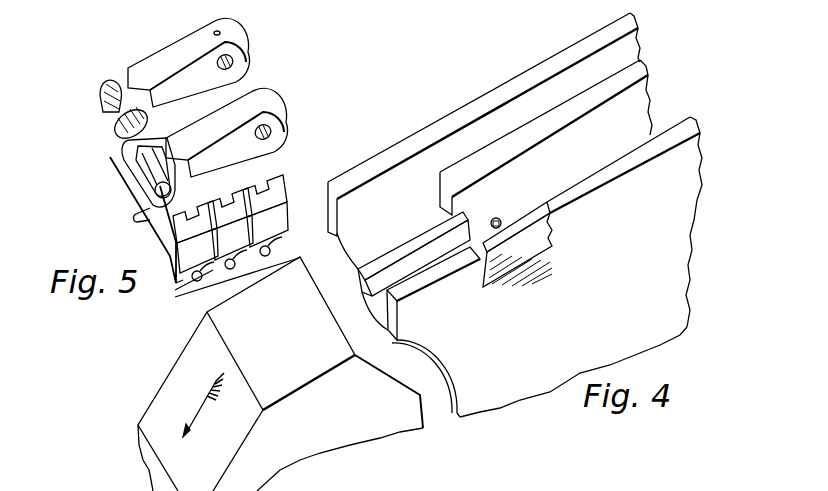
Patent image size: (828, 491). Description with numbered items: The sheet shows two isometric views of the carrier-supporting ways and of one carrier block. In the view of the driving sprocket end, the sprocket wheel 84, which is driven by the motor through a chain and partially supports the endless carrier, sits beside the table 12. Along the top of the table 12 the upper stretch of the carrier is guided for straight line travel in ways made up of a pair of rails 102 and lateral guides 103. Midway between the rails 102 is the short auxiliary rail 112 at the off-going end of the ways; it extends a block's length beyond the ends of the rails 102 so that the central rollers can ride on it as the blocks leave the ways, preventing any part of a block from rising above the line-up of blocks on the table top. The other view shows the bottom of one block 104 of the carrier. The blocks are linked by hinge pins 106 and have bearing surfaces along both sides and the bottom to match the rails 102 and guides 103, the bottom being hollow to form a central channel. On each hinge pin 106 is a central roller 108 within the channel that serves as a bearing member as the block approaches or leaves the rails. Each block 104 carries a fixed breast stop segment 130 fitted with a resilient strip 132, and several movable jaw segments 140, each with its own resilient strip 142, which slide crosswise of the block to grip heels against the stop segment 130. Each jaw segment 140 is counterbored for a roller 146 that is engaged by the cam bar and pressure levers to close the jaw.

In FIG. 4, the table 12 is at (672, 302).
In FIG. 4, the sprocket wheel 84 is at (180, 373).
In FIG. 4, the rails 102 is at (519, 228).
In FIG. 4, the lateral guides 103 is at (512, 107).
In FIG. 5, the block 104 is at (256, 161).
In FIG. 5, the hinge pin 106 is at (106, 98).
In FIG. 5, the central roller 108 is at (121, 134).
In FIG. 4, the auxiliary rail 112 is at (417, 243).
In FIG. 5, the breast stop segment 130 is at (116, 158).
In FIG. 5, the resilient strip 132 is at (120, 170).
In FIG. 5, the jaw segment 140 is at (148, 235).
In FIG. 5, the resilient strip 142 is at (134, 214).
In FIG. 5, the roller 146 is at (186, 292).